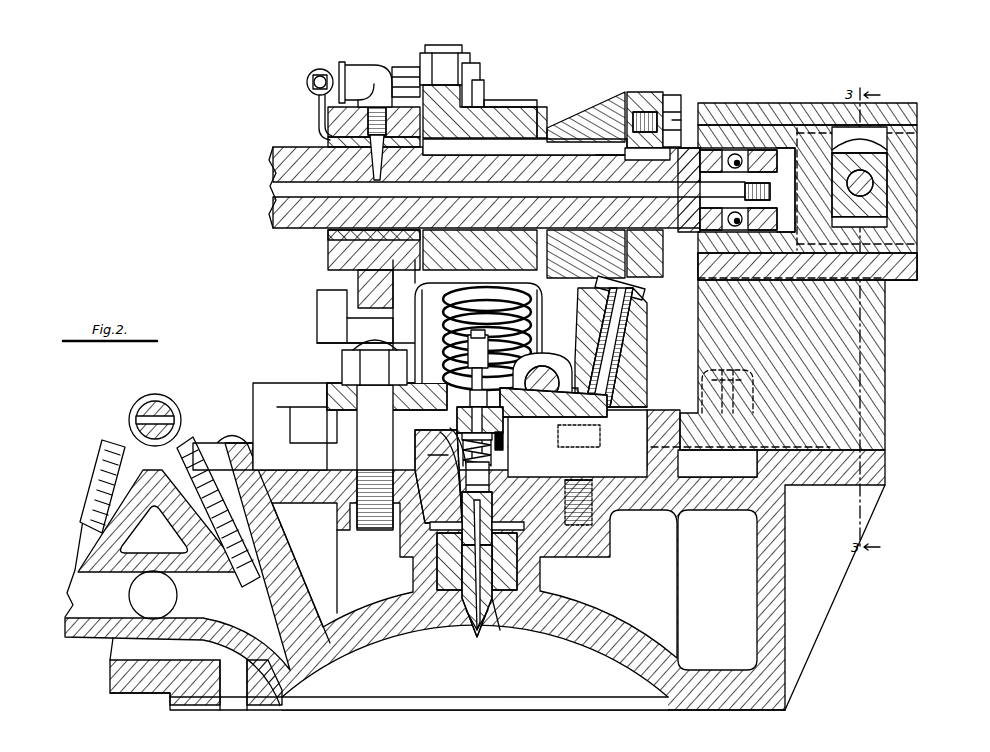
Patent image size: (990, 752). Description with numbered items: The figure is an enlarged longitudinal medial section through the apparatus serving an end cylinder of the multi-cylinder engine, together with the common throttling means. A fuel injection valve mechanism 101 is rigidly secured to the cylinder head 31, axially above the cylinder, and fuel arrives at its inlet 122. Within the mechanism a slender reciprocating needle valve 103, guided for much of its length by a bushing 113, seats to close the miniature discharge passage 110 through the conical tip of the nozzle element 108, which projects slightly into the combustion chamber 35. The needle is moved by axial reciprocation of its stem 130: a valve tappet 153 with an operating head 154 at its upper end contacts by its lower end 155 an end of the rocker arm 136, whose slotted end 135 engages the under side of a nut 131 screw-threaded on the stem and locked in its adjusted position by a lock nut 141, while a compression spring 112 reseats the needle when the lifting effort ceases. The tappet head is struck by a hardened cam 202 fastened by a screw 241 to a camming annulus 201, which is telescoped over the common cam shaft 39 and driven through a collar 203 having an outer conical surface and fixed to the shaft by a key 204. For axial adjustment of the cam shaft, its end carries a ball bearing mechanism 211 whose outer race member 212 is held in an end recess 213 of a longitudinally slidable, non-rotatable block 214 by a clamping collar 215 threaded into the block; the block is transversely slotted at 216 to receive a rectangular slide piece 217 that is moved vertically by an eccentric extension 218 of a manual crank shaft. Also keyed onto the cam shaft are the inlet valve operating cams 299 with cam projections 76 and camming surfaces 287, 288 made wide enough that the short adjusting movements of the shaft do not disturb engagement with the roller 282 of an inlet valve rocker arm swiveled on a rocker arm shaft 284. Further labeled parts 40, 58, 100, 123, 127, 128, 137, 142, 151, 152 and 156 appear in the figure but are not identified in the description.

The head 31 is at (778, 528).
The combustion chamber 35 is at (270, 552).
The cam shaft 39 is at (560, 135).
The fuel supply block 40 is at (320, 113).
The elbow fitting 58 is at (368, 72).
The valve operating cam projections 76 is at (459, 97).
The injector pump body 100 is at (557, 493).
The fuel injection valve mechanism 101 is at (492, 476).
The needle valve 103 is at (474, 636).
The nozzle element 108 is at (463, 623).
The nozzle discharge passage 110 is at (484, 632).
The compression spring 112 is at (575, 447).
The bushing 113 is at (495, 533).
The inlet 122 is at (430, 453).
The fuel passage 123 is at (427, 463).
The spring 127 is at (504, 447).
The orifice 128 is at (502, 634).
The valve stem 130 is at (506, 438).
The locked nut 131 is at (470, 379).
The slotted end of rocker arm 135 is at (455, 349).
The rocker arm 136 is at (544, 366).
The seal 137 is at (505, 452).
The lock nut 141 is at (490, 350).
The cam block 142 is at (507, 405).
The bracket 151 is at (268, 387).
The clamp bolt 152 is at (345, 369).
The valve tappet 153 is at (622, 328).
The operating head 154 is at (648, 292).
The lower end of tappet 155 is at (604, 402).
The shaft 156 is at (285, 187).
The camming annulus 201 is at (668, 104).
The cam 202 is at (641, 95).
The collar 203 is at (612, 103).
The key 204 is at (468, 148).
The ball bearing mechanism 211 is at (742, 222).
The outer race member 212 is at (742, 158).
The end recess 213 is at (748, 188).
The slidable block 214 is at (900, 232).
The clamping collar 215 is at (692, 230).
The transverse slot 216 is at (885, 141).
The slide piece 217 is at (882, 205).
The eccentric extension 218 is at (873, 183).
The screw 241 is at (688, 106).
The roller 282 is at (449, 53).
The rocker arm shaft 284 is at (500, 96).
The camming surface 287 is at (478, 85).
The camming surface 288 is at (545, 135).
The inlet valve operating cams 299 is at (512, 108).